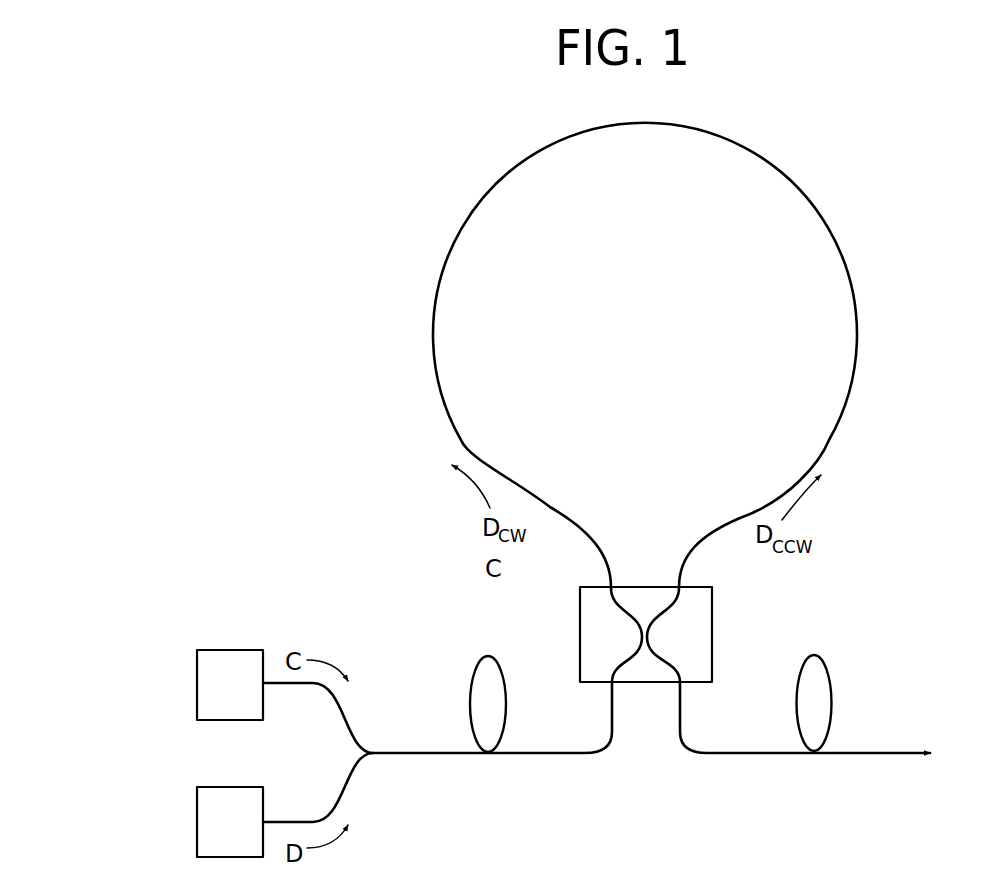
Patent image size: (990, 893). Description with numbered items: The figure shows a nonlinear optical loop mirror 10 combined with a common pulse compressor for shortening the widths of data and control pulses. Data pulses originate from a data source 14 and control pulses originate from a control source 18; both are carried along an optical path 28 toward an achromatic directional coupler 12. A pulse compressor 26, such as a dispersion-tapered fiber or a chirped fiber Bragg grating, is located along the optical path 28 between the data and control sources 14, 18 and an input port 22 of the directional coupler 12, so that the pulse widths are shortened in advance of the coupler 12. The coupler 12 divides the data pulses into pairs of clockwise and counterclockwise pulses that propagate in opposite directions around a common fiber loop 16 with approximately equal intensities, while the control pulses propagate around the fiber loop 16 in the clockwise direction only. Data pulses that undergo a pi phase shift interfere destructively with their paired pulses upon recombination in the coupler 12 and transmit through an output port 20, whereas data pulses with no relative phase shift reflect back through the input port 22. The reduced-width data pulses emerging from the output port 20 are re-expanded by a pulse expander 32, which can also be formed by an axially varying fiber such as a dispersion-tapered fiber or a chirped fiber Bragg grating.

The nonlinear optical loop mirror 10 is at (355, 240).
The achromatic directional coupler 12 is at (697, 632).
The data source 14 is at (210, 672).
The common fiber loop 16 is at (601, 127).
The control source 18 is at (205, 815).
The output port 20 is at (682, 683).
The input port 22 is at (608, 683).
The pulse compressor 26 is at (468, 690).
The optical path 28 is at (442, 753).
The pulse expander 32 is at (830, 673).